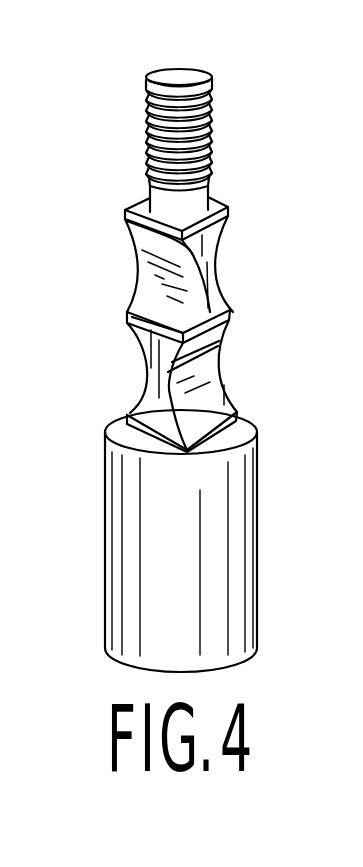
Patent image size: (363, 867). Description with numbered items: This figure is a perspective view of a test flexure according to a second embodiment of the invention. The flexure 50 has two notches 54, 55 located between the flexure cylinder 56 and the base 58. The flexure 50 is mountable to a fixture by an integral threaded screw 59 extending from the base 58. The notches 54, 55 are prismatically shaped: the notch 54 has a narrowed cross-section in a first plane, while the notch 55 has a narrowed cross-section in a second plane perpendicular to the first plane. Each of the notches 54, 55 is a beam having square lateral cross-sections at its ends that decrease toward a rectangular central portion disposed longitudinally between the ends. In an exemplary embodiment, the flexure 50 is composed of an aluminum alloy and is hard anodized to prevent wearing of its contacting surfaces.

The flexure 50 is at (244, 122).
The notch 54 is at (217, 240).
The notch 55 is at (200, 367).
The flexure cylinder 56 is at (105, 490).
The base 58 is at (213, 205).
The integral threaded screw 59 is at (148, 119).